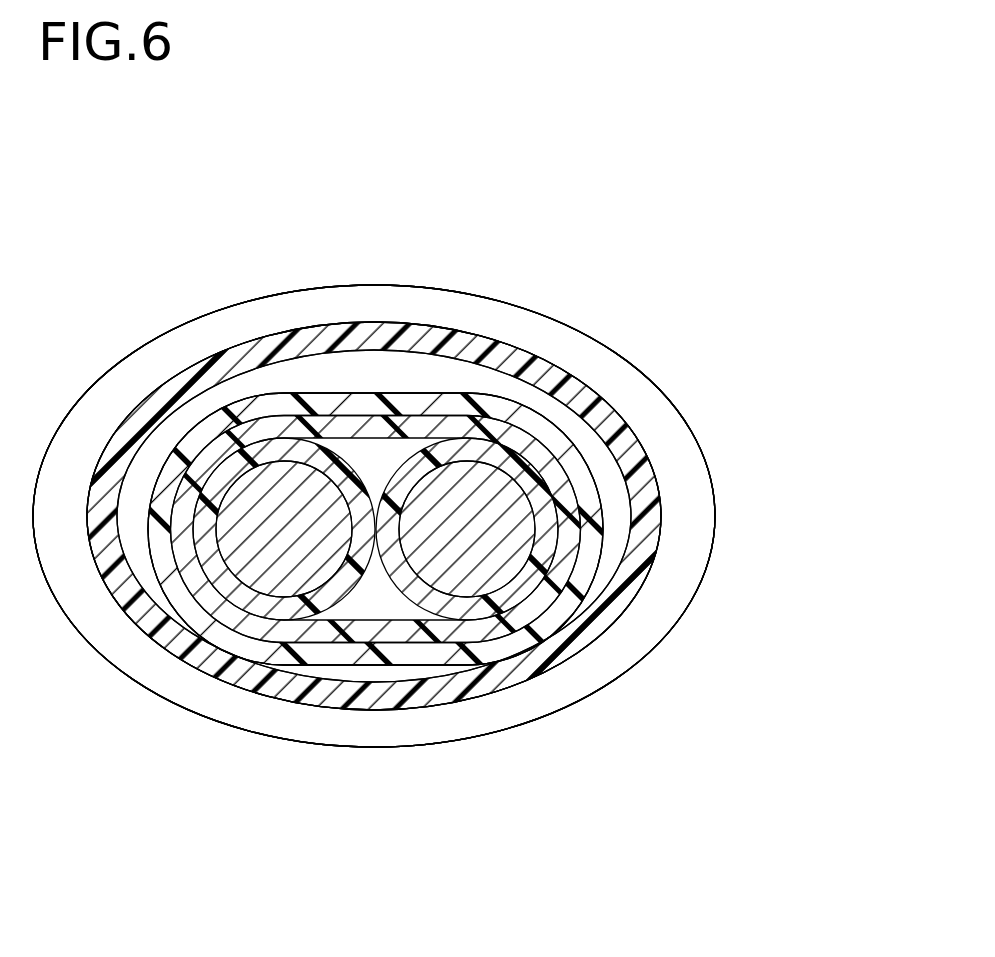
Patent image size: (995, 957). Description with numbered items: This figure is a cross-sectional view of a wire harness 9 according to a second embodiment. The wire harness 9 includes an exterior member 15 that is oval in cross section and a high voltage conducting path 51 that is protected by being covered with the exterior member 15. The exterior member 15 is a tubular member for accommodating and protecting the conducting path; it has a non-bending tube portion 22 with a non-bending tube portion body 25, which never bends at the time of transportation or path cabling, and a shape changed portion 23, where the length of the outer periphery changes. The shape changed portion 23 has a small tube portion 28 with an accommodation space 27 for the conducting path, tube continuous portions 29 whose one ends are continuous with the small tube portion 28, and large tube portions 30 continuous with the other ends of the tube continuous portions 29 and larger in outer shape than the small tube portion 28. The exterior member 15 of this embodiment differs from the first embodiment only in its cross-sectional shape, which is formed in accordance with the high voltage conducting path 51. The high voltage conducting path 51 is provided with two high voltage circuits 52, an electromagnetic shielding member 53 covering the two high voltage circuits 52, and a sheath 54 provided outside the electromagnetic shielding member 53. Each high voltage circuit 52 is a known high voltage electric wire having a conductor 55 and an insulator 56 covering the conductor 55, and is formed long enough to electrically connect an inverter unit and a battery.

The wire harness 9 is at (566, 180).
The exterior member 15 is at (535, 308).
The non-bending tube portion 22 is at (150, 690).
The shape changed portion 23 is at (382, 727).
The non-bending tube portion body 25 is at (587, 700).
The accommodation space 27 is at (335, 378).
The small tube portion 28 is at (447, 698).
The tube continuous portion 29 is at (277, 718).
The large tube portion 30 is at (520, 727).
The high voltage conducting path 51 is at (520, 399).
The high voltage circuit 52 is at (432, 418).
The electromagnetic shielding member 53 is at (384, 423).
The sheath 54 is at (448, 407).
The conductor 55 is at (248, 485).
The insulator 56 is at (272, 447).